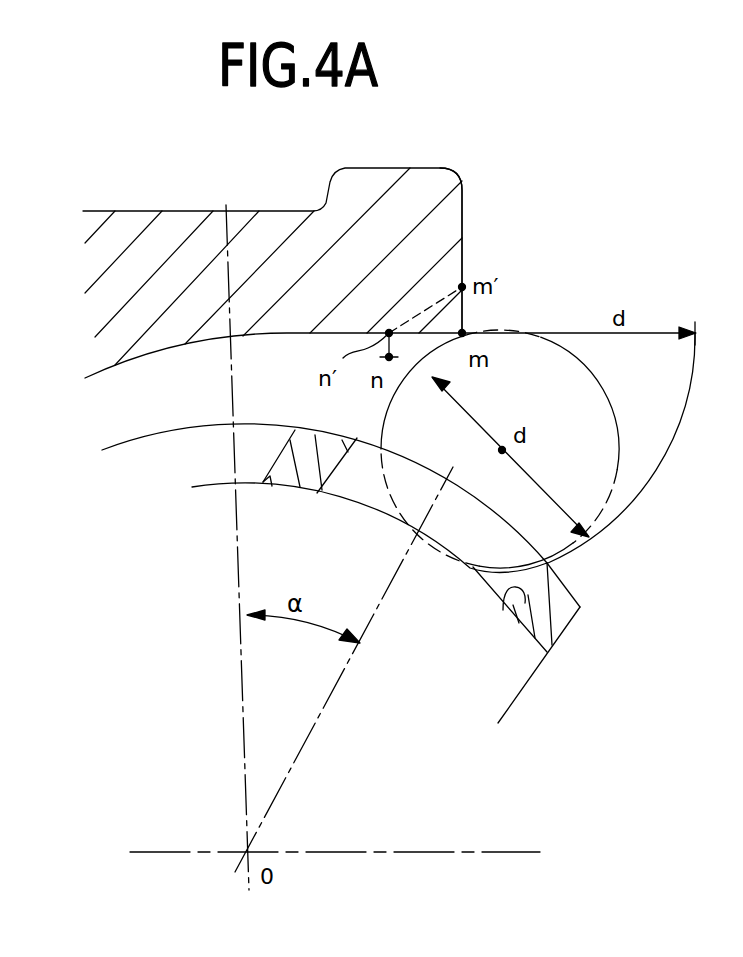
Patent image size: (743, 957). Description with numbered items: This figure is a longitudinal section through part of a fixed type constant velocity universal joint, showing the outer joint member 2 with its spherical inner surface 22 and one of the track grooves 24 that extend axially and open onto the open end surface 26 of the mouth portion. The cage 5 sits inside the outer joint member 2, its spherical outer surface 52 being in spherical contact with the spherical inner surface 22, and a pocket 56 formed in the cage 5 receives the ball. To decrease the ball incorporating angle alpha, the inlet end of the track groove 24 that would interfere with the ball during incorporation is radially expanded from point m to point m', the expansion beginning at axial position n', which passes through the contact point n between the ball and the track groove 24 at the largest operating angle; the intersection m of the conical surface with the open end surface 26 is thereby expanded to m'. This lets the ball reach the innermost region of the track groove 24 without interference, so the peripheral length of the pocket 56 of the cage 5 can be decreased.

The outer joint member 2 is at (389, 246).
The track groove 24 is at (287, 347).
The open end surface 26 is at (464, 205).
The spherical inner surface 22 is at (122, 451).
The cage 5 is at (555, 642).
The spherical outer surface 52 is at (565, 580).
The pocket 56 is at (503, 600).